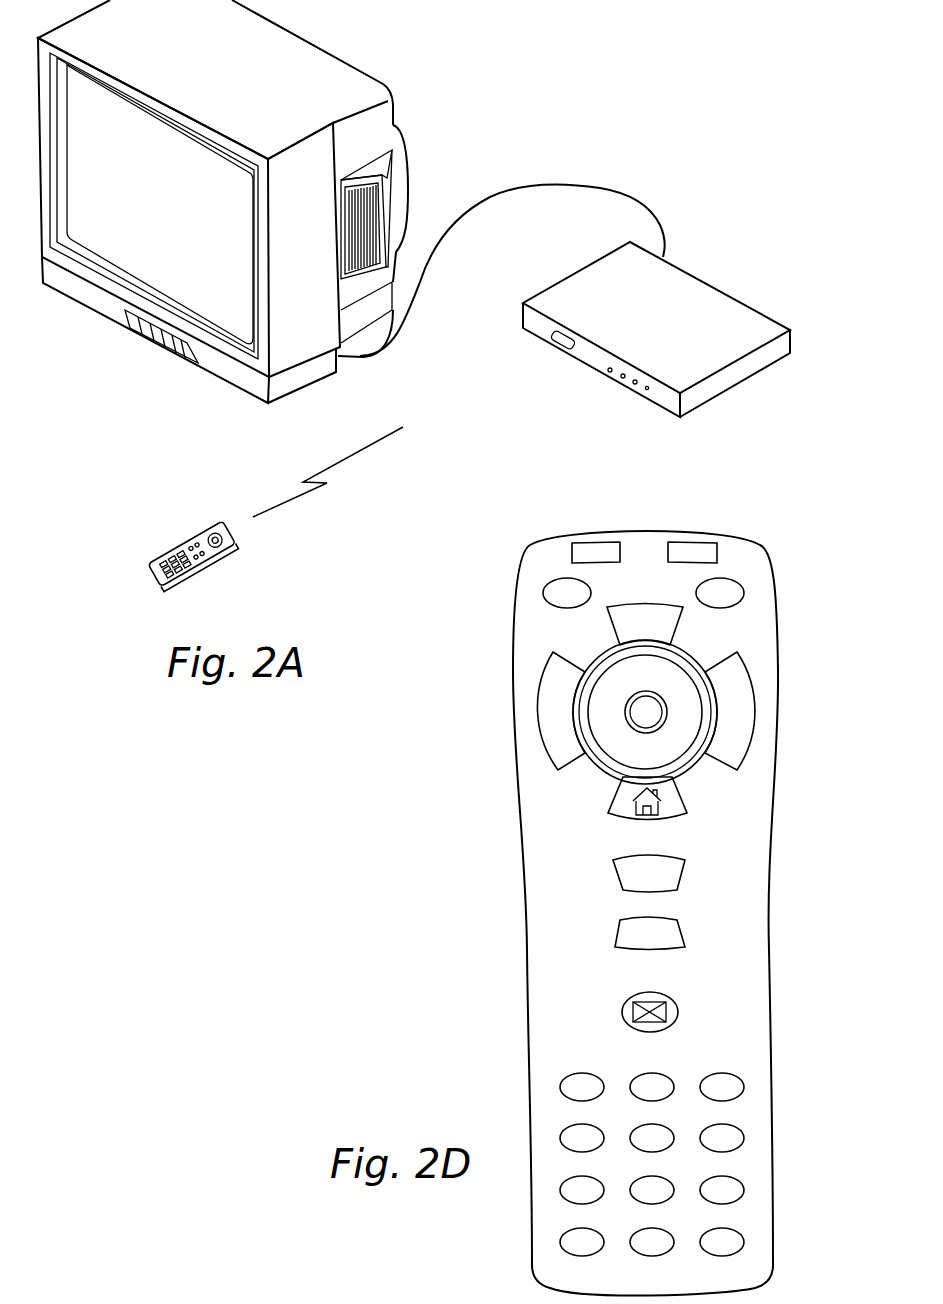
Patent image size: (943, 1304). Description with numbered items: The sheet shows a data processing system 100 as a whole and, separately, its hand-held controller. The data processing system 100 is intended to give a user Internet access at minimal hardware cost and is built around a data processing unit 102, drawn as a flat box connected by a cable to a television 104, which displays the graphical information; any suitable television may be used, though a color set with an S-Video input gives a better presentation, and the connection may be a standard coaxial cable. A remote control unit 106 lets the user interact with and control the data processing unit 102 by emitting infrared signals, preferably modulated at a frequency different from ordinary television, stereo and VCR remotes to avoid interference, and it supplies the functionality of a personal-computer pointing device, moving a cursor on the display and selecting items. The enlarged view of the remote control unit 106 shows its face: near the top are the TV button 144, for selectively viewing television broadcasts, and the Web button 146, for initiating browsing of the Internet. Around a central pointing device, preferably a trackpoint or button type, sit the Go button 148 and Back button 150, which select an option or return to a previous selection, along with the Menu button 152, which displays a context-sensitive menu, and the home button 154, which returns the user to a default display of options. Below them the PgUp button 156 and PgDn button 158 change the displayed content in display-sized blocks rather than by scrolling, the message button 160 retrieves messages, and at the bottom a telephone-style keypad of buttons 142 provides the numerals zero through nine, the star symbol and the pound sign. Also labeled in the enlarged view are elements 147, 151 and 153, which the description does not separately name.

In FIG. 2A, the data processing system 100 is at (525, 442).
In FIG. 2A, the data processing unit 102 is at (727, 290).
In FIG. 2A, the television 104 is at (366, 70).
In FIG. 2A, the remote control unit 106 is at (172, 548).
In FIG. 2D, the remote control unit 106 is at (772, 1038).
In FIG. 2D, the buttons 142 is at (782, 1060).
In FIG. 2D, the TV button 144 is at (593, 542).
In FIG. 2D, the Web button 146 is at (693, 541).
In FIG. 2D, the center select button of navigation ring 147 is at (656, 711).
In FIG. 2D, the Go button 148 is at (732, 772).
In FIG. 2D, the Back button 150 is at (562, 770).
In FIG. 2D, the Help button 151 is at (543, 592).
In FIG. 2D, the Menu button 152 is at (653, 603).
In FIG. 2D, the Update button 153 is at (745, 597).
In FIG. 2D, the home button 154 is at (675, 817).
In FIG. 2D, the PgUp button 156 is at (678, 872).
In FIG. 2D, the PgDn button 158 is at (668, 948).
In FIG. 2D, the message button 160 is at (678, 1012).